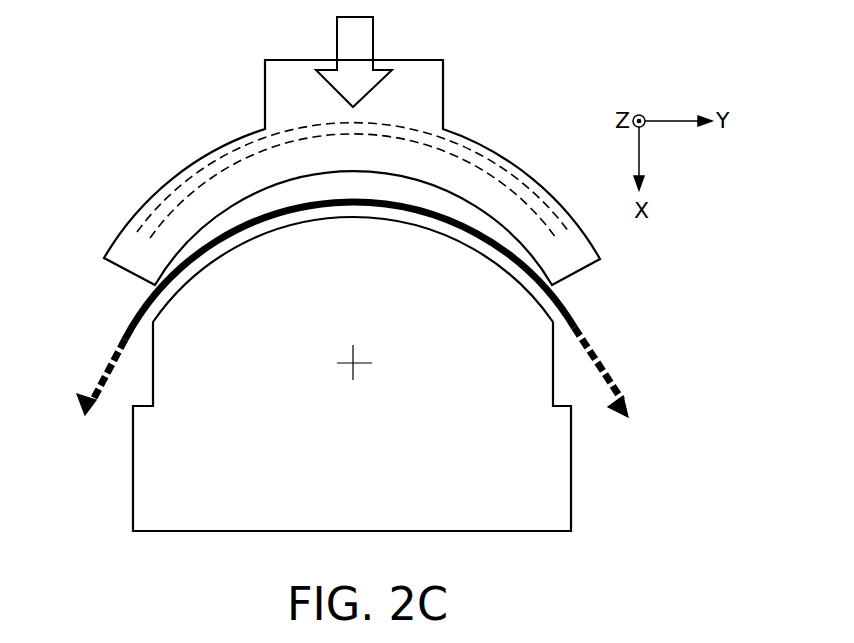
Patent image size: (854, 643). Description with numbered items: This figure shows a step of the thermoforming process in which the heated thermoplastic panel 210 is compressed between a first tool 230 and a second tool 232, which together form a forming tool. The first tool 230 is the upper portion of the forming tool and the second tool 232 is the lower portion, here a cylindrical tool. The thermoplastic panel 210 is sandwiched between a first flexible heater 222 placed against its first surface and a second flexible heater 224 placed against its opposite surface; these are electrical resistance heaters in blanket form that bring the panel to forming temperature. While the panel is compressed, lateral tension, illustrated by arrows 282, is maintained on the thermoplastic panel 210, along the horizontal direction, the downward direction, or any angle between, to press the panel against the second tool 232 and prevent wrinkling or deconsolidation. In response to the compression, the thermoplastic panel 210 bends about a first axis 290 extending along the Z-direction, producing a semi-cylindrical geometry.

The thermoplastic panel 210 is at (417, 214).
The first flexible heater 222 is at (293, 199).
The second flexible heater 224 is at (298, 216).
The first tool 230 is at (368, 148).
The second tool 232 is at (367, 468).
The arrows 282 is at (107, 378).
The first axis 290 is at (357, 367).